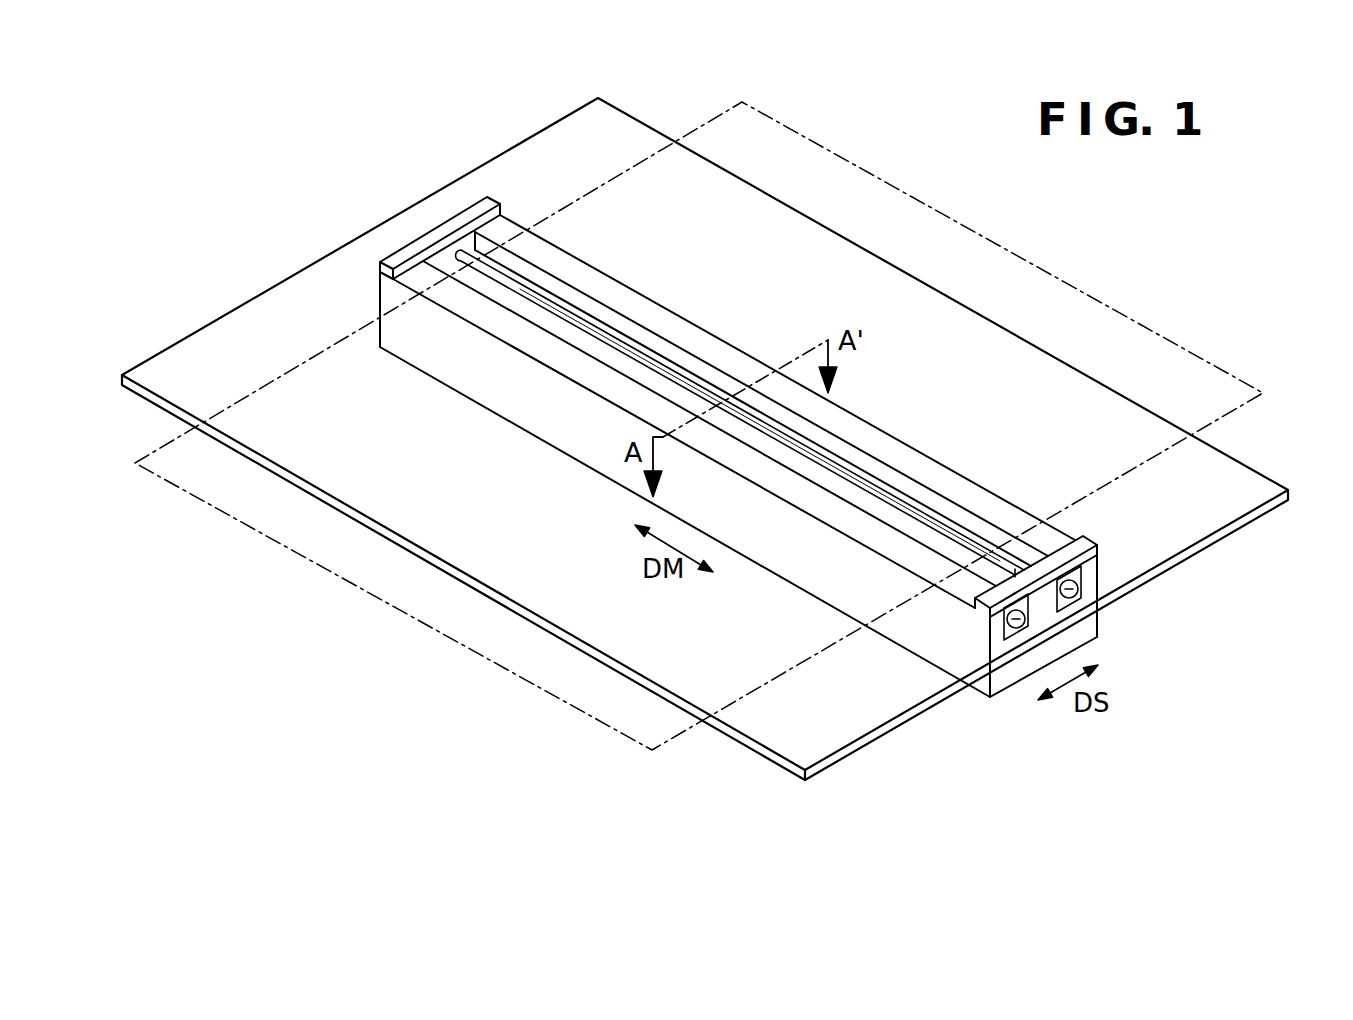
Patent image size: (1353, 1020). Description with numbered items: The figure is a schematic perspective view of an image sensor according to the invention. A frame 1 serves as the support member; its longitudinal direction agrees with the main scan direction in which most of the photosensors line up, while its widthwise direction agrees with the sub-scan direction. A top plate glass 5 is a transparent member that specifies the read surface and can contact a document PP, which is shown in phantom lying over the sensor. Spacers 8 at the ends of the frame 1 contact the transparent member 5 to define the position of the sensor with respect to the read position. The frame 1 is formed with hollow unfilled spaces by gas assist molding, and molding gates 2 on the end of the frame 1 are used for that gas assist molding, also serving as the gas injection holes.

The frame 1 is at (507, 410).
The molding gates 2 is at (1028, 613).
The top plate glass 5 is at (1208, 465).
The spacers 8 is at (403, 247).
The document PP is at (1090, 328).